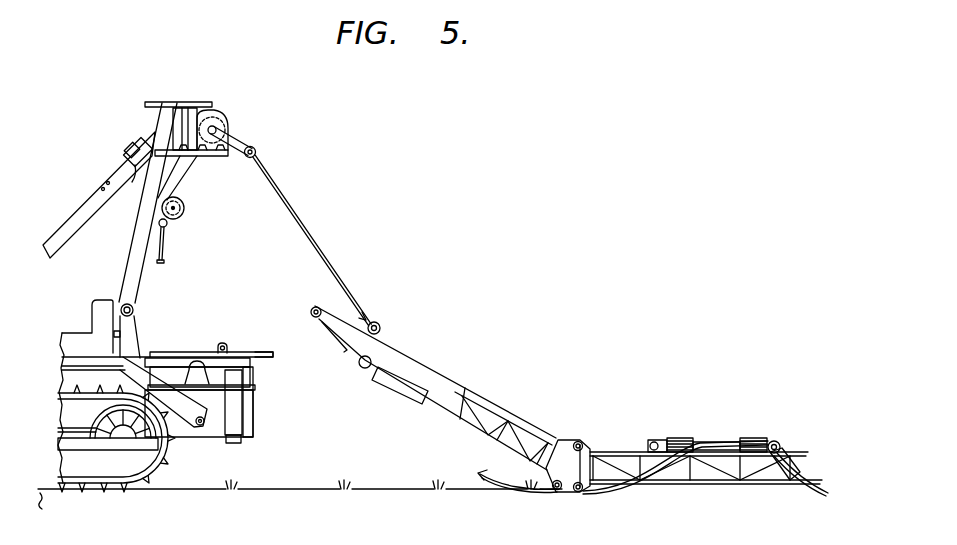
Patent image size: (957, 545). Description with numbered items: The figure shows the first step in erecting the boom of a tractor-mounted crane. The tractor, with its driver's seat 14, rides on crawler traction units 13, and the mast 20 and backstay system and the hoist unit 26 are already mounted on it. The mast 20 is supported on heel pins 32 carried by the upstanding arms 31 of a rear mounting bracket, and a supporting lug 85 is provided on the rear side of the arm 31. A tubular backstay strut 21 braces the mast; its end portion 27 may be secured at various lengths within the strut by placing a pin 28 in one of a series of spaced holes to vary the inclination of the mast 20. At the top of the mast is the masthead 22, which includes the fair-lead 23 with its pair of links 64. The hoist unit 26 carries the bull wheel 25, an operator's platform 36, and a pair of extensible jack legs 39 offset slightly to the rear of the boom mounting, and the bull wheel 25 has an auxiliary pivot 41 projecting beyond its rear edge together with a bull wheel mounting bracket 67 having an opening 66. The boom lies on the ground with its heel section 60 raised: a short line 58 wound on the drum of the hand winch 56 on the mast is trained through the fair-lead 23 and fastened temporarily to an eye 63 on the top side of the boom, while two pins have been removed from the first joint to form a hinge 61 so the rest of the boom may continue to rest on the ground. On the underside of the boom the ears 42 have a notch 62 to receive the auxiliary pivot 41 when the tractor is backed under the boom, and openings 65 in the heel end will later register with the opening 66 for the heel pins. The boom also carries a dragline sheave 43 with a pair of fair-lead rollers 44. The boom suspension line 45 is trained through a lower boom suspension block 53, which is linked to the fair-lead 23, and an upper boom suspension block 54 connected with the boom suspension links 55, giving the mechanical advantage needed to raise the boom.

The crawler traction unit 13 is at (170, 458).
The driver's seat 14 is at (91, 318).
The mast 20 is at (139, 236).
The tubular backstay strut 21 is at (68, 213).
The masthead 22 is at (177, 101).
The fair-lead 23 is at (224, 114).
The bull wheel 25 is at (182, 352).
The hoist unit 26 is at (254, 408).
The end portion 27 is at (126, 159).
The pin 28 is at (108, 178).
The upstanding arm 31 is at (137, 326).
The heel pin 32 is at (134, 309).
The operator's platform 36 is at (84, 357).
The extensible jack leg 39 is at (234, 444).
The auxiliary pivot 41 is at (272, 359).
The ears 42 is at (360, 367).
The dragline sheave 43 is at (433, 357).
The fair-lead rollers 44 is at (392, 391).
The boom suspension line 45 is at (640, 494).
The lower boom suspension block 53 is at (672, 438).
The upper boom suspension block 54 is at (773, 441).
The boom suspension links 55 is at (820, 493).
The hand winch 56 is at (185, 212).
The short line 58 is at (306, 217).
The heel section 60 is at (467, 387).
The hinge 61 is at (580, 438).
The notch 62 is at (346, 351).
The eye 63 is at (380, 323).
The links 64 is at (254, 147).
The openings 65 is at (311, 313).
The opening 66 is at (222, 343).
The bull wheel mounting bracket 67 is at (227, 349).
The supporting lug 85 is at (115, 333).